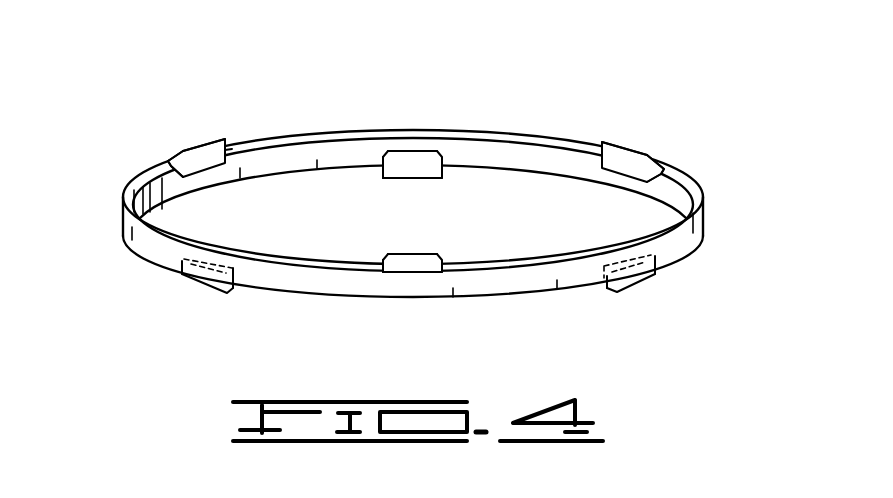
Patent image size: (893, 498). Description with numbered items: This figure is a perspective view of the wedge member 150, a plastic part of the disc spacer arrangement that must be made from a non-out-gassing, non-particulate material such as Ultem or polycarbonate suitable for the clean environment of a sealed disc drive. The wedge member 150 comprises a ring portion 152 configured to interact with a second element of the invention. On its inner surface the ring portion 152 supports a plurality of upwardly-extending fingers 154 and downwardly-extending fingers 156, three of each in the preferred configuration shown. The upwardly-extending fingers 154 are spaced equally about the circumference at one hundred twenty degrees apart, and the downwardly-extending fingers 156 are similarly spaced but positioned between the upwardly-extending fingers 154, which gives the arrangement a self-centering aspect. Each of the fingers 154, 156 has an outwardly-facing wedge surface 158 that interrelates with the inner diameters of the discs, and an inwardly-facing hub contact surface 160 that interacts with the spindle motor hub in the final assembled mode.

The wedge member 150 is at (318, 76).
The ring portion 152 is at (703, 237).
The upwardly-extending fingers 154 is at (193, 148).
The downwardly-extending fingers 156 is at (398, 178).
The wedge surface 158 is at (173, 158).
The hub contact surface 160 is at (208, 157).